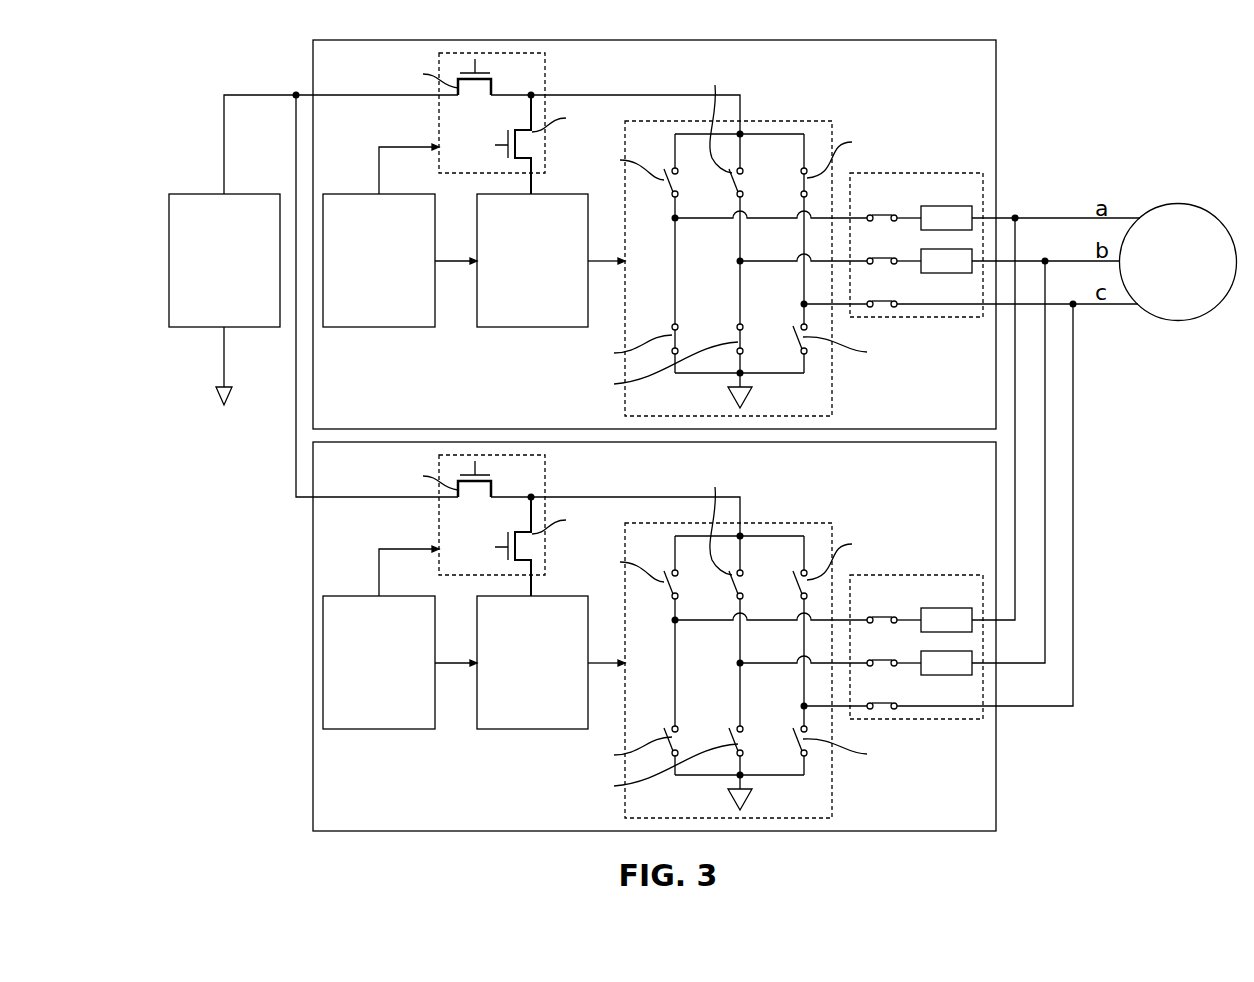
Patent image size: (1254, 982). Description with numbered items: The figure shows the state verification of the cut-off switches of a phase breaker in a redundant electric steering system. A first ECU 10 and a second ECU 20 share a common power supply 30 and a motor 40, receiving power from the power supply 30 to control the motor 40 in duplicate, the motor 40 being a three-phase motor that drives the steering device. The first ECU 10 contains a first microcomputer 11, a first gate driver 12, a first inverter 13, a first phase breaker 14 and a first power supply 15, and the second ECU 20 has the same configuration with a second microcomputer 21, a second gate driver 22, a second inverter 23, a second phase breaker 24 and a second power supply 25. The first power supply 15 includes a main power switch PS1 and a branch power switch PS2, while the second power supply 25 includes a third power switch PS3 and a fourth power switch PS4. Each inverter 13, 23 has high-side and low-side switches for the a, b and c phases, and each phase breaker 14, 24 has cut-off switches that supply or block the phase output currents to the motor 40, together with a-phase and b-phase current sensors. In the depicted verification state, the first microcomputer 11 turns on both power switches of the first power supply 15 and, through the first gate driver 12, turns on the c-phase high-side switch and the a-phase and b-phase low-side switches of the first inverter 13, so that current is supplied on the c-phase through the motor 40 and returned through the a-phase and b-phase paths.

The first ECU 10 is at (313, 55).
The first microcomputer 11 is at (378, 327).
The first gate driver 12 is at (513, 327).
The first inverter 13 is at (803, 121).
The first phase breaker 14 is at (956, 173).
The first power supply 15 is at (546, 83).
The second ECU 20 is at (620, 636).
The second microcomputer 21 is at (379, 699).
The second gate driver 22 is at (532, 699).
The second inverter 23 is at (739, 635).
The second phase breaker 24 is at (916, 611).
The second power supply 25 is at (559, 525).
The power supply 30 is at (169, 258).
The motor 40 is at (1177, 203).